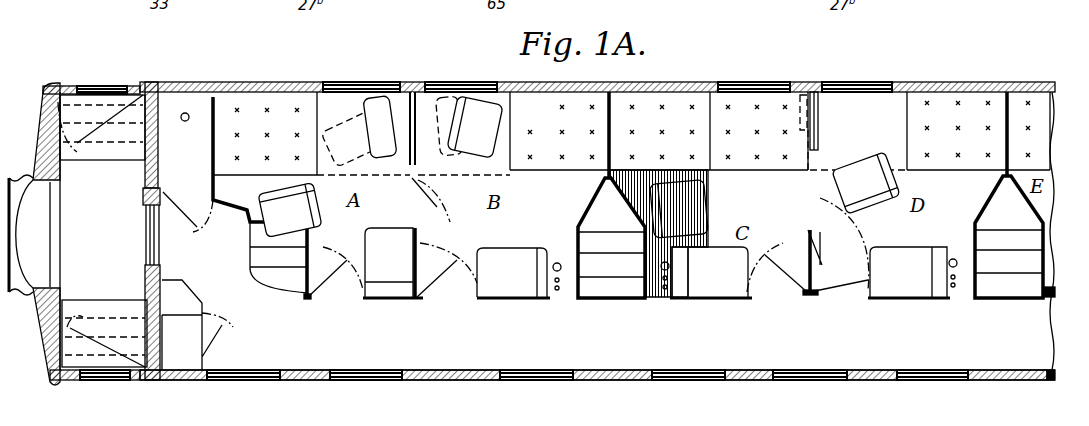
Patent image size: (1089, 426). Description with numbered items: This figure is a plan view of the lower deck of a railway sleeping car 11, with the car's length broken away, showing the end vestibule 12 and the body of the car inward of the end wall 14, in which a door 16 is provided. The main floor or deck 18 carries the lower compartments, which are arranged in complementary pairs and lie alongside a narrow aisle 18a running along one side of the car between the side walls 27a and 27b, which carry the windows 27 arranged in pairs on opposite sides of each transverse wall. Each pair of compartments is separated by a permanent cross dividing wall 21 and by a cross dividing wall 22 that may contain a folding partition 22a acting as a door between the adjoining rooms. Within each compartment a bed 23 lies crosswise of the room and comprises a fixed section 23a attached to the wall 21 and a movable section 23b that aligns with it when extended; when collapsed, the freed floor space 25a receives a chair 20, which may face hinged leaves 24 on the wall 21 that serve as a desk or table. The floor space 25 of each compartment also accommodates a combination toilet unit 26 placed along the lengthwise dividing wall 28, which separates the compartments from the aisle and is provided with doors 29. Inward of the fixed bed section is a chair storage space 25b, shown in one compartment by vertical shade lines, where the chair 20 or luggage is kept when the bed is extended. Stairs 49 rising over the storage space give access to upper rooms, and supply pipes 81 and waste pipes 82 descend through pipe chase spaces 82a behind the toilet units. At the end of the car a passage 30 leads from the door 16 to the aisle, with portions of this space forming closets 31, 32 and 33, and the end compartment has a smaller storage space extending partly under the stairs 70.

The car 11 is at (258, 77).
The end vestibule 12 is at (78, 234).
The end wall 14 is at (147, 173).
The door 16 is at (153, 252).
The main floor or deck 18 is at (597, 352).
The aisle 18a is at (305, 347).
The chair 20 is at (325, 137).
The cross dividing wall 21 is at (605, 108).
The cross dividing wall 22 is at (800, 107).
The folding partition 22a is at (818, 237).
The bed 23 is at (685, 94).
The fixed section of bed 23a is at (670, 131).
The movable section of bed 23b is at (767, 131).
The shelves or leaves 24 is at (423, 103).
The floor space 25 is at (765, 245).
The supplemental floor space 25a is at (838, 98).
The chair storage space 25b is at (643, 185).
The toilet unit 26 is at (656, 262).
The window 27 is at (468, 83).
The left side wall 27a is at (1022, 64).
The right side wall 27b is at (472, 368).
The lengthwise dividing wall 28 is at (703, 298).
The door 29 is at (785, 280).
The passage 30 is at (263, 249).
The storage space or closet 31 is at (177, 100).
The storage space or closet 32 is at (172, 288).
The storage space or closet 33 is at (192, 342).
The stairs 49 is at (598, 292).
The stairs 70 is at (262, 257).
The supply pipe 81 is at (557, 290).
The waste pipe 82 is at (189, 117).
The pipe chase space 82a is at (548, 298).